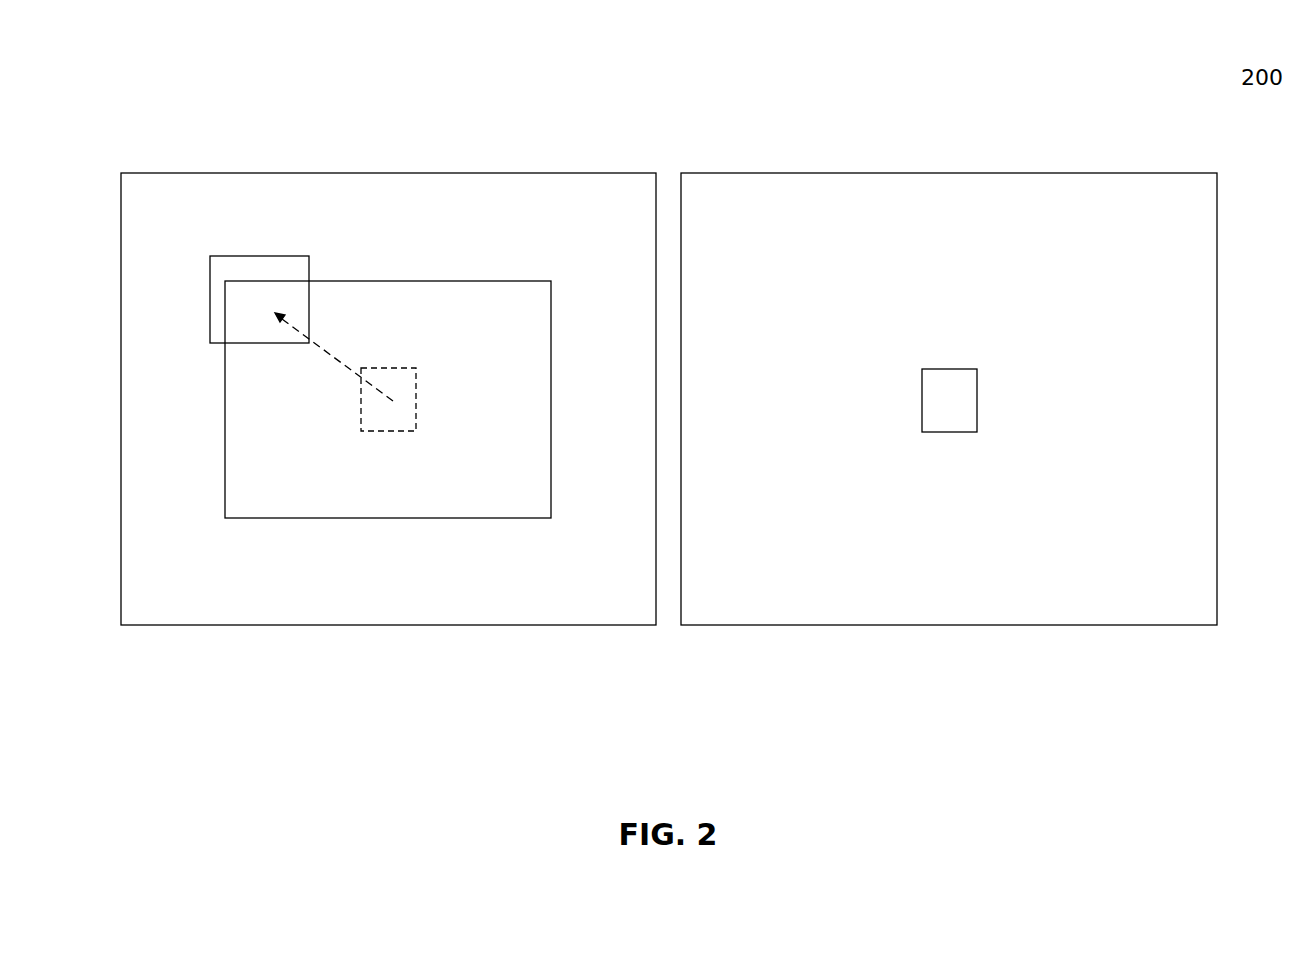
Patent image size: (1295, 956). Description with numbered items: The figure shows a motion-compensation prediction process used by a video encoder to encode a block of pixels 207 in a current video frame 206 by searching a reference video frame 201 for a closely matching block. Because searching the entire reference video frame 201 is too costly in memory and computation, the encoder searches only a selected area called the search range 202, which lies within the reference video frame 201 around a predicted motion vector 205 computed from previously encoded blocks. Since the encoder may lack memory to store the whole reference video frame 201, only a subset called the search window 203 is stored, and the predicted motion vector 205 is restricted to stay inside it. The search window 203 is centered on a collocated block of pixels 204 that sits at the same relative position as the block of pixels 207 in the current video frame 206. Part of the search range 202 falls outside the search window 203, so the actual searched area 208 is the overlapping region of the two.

The reference video frame 201 is at (537, 173).
The search range 202 is at (228, 256).
The search window 203 is at (396, 281).
The block of pixels 204 is at (401, 368).
The predicted motion vector 205 is at (335, 358).
The current video frame 206 is at (1099, 173).
The block of pixels 207 is at (957, 369).
The actual searched area 208 is at (263, 321).